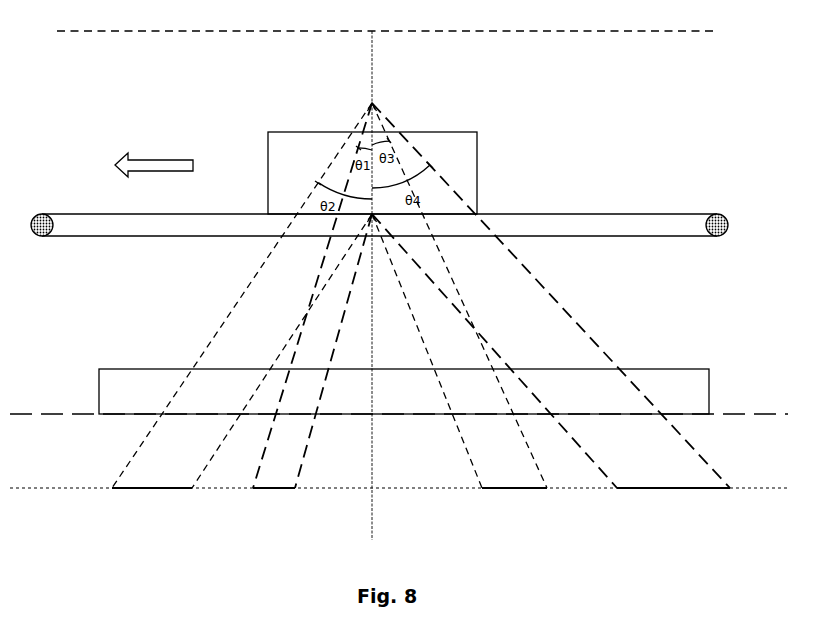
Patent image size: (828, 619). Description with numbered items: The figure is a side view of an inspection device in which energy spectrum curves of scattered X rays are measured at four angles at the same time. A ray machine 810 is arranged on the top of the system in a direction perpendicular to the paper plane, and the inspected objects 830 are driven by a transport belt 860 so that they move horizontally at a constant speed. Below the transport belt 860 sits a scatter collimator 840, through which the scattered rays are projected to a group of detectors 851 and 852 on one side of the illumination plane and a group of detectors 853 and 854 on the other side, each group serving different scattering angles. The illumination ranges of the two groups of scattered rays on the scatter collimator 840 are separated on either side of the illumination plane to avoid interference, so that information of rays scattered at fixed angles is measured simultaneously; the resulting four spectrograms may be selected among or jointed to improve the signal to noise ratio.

The ray machine 810 is at (387, 21).
The inspected objects 830 is at (433, 122).
The scatter collimator 840 is at (685, 368).
The detector 851 is at (242, 309).
The detector 852 is at (312, 309).
The detector 853 is at (459, 309).
The detector 854 is at (551, 309).
The transport belt 860 is at (719, 216).